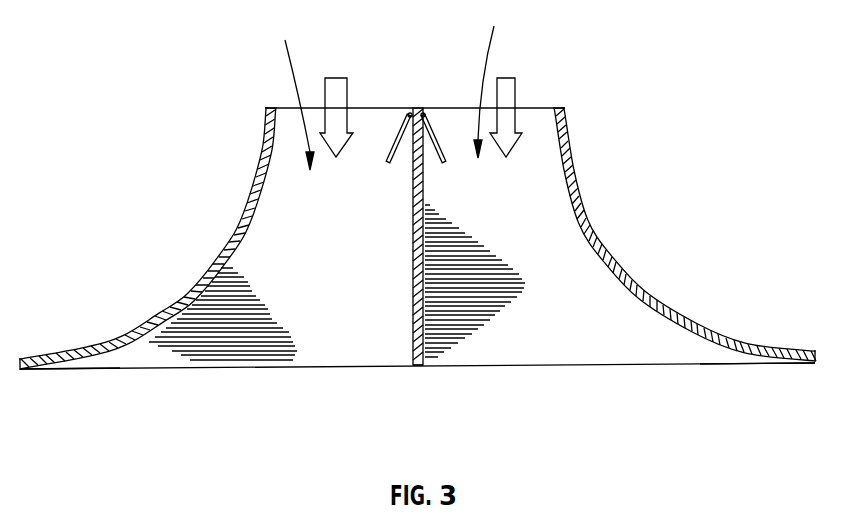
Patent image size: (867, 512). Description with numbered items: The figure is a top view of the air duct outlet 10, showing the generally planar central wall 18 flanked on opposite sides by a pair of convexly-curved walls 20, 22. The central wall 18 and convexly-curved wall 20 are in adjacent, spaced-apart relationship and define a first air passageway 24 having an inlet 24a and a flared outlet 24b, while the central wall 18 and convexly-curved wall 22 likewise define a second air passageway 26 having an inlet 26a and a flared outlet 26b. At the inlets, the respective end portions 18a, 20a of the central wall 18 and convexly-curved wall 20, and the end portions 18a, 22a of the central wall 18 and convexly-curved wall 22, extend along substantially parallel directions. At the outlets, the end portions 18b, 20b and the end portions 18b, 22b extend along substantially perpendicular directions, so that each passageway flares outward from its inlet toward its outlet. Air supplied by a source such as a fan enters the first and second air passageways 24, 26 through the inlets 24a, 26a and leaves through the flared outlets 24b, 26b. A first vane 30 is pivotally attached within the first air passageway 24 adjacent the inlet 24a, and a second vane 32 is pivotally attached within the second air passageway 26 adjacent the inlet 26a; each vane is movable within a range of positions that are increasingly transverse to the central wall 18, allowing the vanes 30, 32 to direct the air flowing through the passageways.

The air duct outlet 10 is at (566, 62).
The central wall 18 is at (413, 260).
The end portion of the central wall 18a is at (413, 108).
The end portion of the central wall 18b is at (418, 366).
The convexly-curved wall 20 is at (637, 278).
The end portion of the convexly-curved wall 20a is at (560, 108).
The end portion of the convexly-curved wall 20b is at (806, 350).
The convexly-curved wall 22 is at (211, 262).
The end portion of the convexly-curved wall 22a is at (266, 114).
The end portion of the convexly-curved wall 22b is at (31, 358).
The first air passageway 24 is at (498, 79).
The first air passageway inlet 24a is at (527, 108).
The first air passageway outlet 24b is at (768, 363).
The second air passageway 26 is at (310, 90).
The second air passageway inlet 26a is at (288, 108).
The second air passageway outlet 26b is at (80, 370).
The first vane 30 is at (441, 146).
The second vane 32 is at (392, 138).